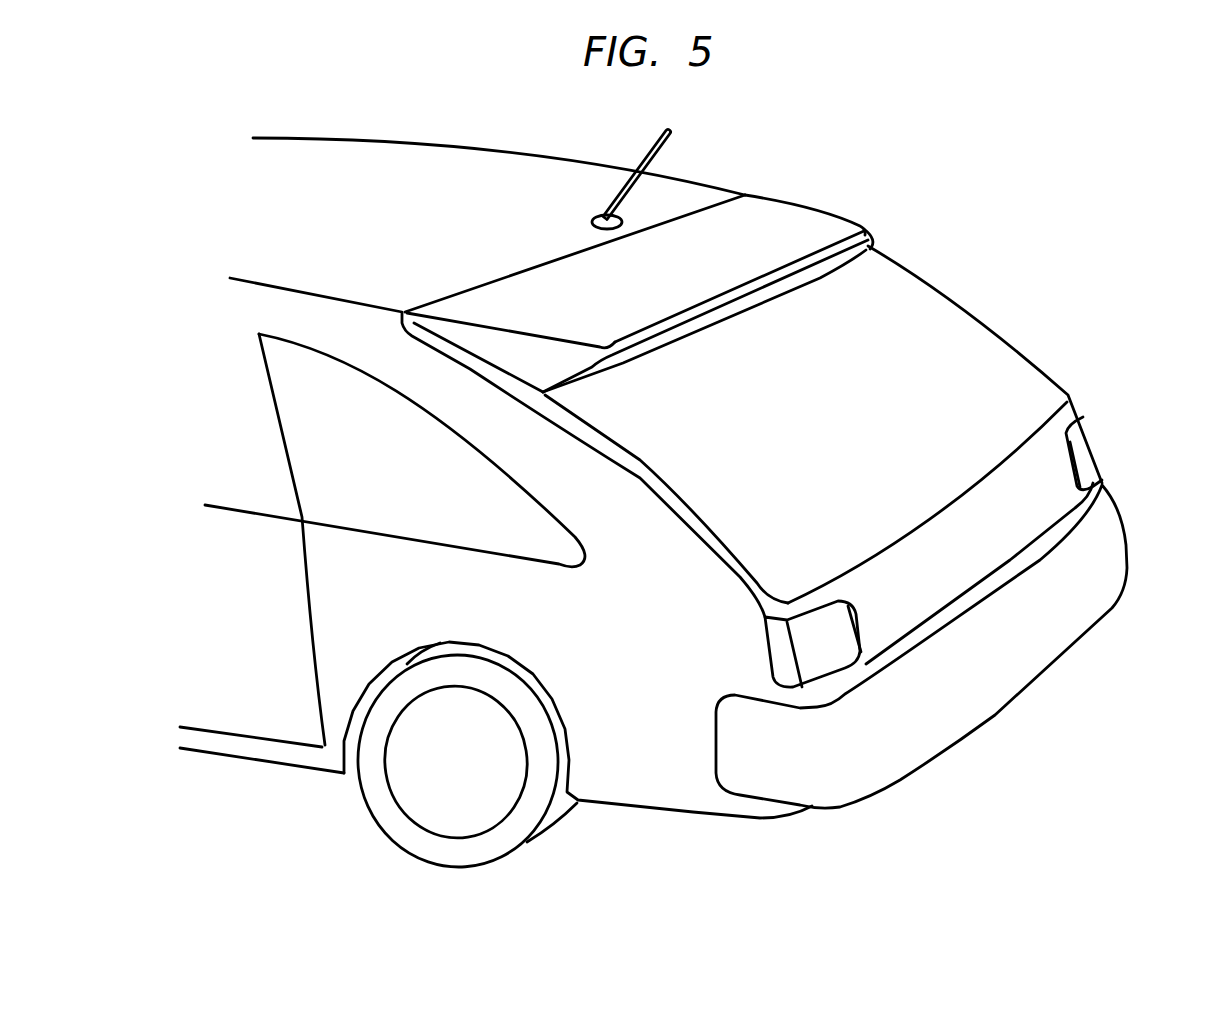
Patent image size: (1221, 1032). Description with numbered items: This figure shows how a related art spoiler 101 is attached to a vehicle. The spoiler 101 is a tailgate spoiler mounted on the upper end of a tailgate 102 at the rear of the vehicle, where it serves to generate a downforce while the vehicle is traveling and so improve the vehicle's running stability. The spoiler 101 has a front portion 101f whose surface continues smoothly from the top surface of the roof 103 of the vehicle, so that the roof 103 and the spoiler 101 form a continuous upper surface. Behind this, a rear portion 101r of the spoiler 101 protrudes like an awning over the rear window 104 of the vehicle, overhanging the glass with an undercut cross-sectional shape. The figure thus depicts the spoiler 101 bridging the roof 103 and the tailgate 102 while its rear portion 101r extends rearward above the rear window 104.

The spoiler 101 is at (696, 240).
The front portion 101f is at (575, 318).
The rear portion 101r is at (885, 252).
The tailgate 102 is at (1045, 452).
The roof 103 is at (687, 192).
The rear window 104 is at (958, 330).